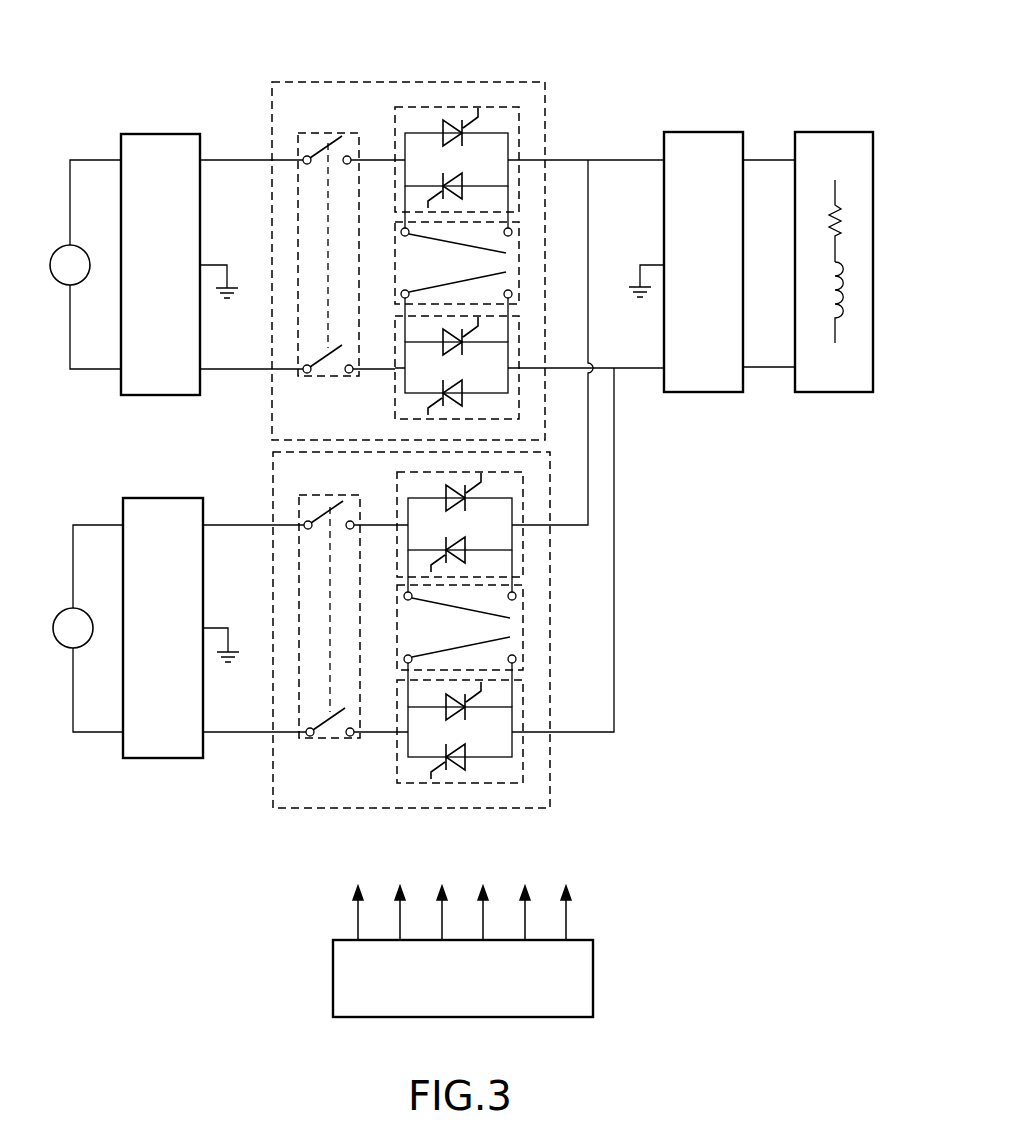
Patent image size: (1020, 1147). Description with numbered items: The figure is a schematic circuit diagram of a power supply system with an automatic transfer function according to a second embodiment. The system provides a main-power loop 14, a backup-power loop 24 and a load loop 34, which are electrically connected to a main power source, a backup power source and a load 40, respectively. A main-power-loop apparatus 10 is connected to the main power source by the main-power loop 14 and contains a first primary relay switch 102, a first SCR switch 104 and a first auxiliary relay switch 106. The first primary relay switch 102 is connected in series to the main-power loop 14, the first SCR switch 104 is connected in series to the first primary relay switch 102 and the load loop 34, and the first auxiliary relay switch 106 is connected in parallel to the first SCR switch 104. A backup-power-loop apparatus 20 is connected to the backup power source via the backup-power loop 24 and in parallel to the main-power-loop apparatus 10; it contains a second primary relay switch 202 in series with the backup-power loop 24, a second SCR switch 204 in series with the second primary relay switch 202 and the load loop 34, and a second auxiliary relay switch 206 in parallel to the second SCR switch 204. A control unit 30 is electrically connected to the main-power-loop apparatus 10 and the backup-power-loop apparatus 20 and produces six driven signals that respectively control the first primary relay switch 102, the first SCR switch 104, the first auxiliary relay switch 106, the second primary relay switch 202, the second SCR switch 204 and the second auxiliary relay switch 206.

The main-power-loop apparatus 10 is at (493, 82).
The main-power loop 14 is at (160, 134).
The backup-power-loop apparatus 20 is at (542, 765).
The backup-power loop 24 is at (165, 760).
The control unit 30 is at (593, 978).
The load loop 34 is at (703, 132).
The load 40 is at (835, 132).
The first primary relay switch 102 is at (326, 133).
The first SCR switch 104 is at (425, 108).
The first auxiliary relay switch 106 is at (513, 260).
The second primary relay switch 202 is at (328, 495).
The second SCR switch 204 is at (518, 487).
The second auxiliary relay switch 206 is at (518, 626).